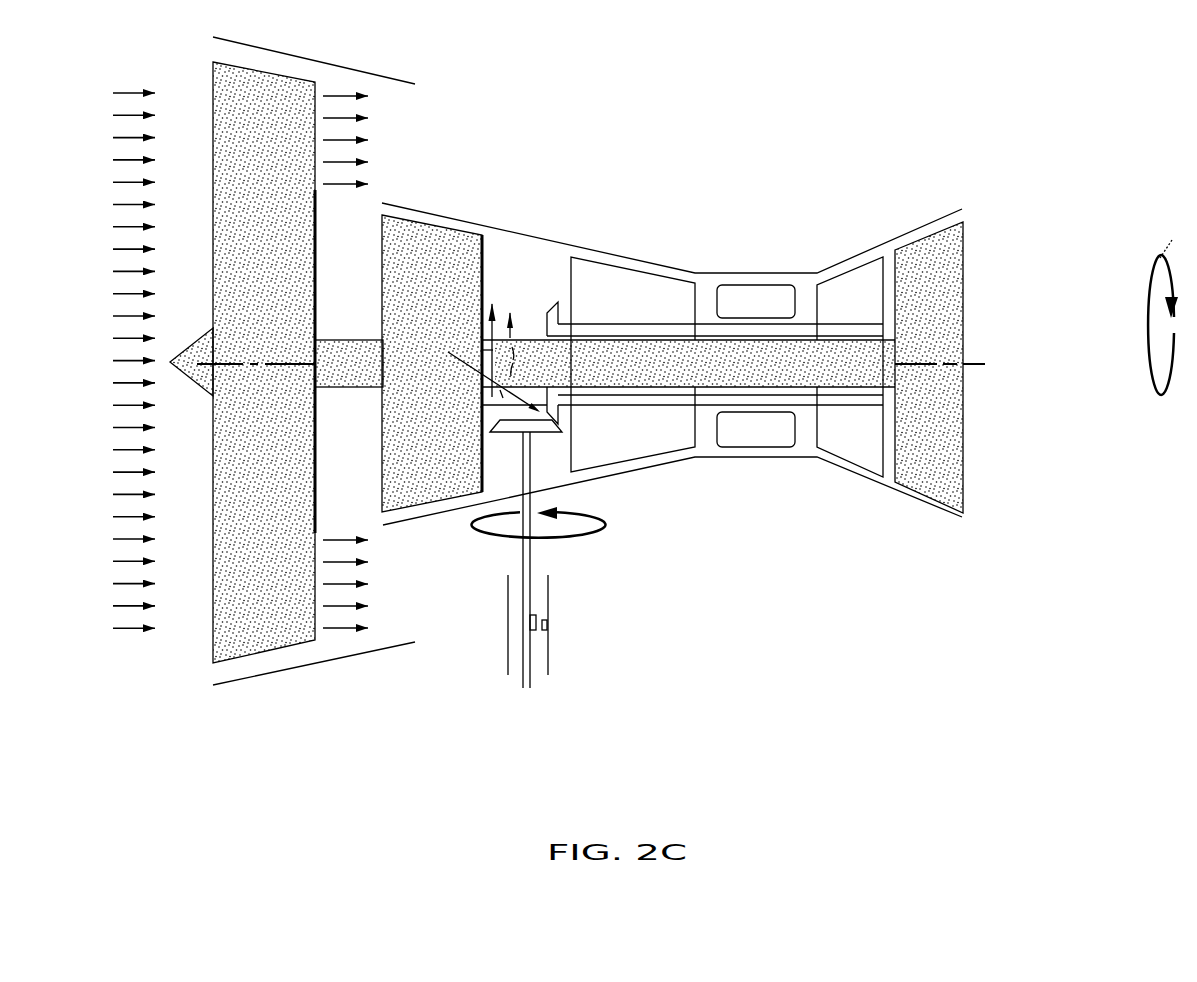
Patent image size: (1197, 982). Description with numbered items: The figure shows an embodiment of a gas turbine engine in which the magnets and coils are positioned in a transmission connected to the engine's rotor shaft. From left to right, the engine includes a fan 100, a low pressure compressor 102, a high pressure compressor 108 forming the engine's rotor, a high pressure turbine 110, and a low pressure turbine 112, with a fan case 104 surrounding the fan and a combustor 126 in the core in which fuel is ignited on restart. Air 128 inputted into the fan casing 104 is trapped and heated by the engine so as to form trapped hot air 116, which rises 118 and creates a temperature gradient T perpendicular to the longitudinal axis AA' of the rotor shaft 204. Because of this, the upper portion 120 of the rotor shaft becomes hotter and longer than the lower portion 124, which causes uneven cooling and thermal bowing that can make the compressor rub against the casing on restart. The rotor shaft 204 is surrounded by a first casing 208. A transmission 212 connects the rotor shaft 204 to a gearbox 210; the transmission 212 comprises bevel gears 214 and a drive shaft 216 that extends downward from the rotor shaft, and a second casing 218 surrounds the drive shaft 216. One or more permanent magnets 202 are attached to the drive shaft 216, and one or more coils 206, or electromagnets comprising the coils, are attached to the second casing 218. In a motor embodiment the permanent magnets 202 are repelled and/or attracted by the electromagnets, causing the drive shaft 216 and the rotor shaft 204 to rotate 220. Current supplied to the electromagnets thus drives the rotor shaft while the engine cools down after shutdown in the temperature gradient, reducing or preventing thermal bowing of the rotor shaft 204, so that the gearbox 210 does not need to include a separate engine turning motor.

The fan 100 is at (244, 231).
The low pressure compressor 102 is at (430, 224).
The fan case 104 is at (313, 61).
The high pressure compressor 108 is at (633, 268).
The high pressure turbine 110 is at (852, 268).
The low pressure turbine 112 is at (928, 236).
The trapped hot air 116 is at (522, 240).
The rising of hot air 118 is at (508, 336).
The upper portion of rotor shaft 120 is at (703, 323).
The lower portion of rotor shaft 124 is at (703, 407).
The combustor 126 is at (755, 283).
The air 128 is at (115, 82).
The permanent magnets 202 is at (537, 618).
The rotor shaft 204 is at (873, 333).
The coils 206 is at (548, 625).
The first casing 208 is at (413, 517).
The gearbox 210 is at (596, 767).
The transmission 212 is at (641, 633).
The bevel gears 214 is at (476, 368).
The drive shaft 216 is at (532, 547).
The second casing 218 is at (548, 658).
The rotation 220 is at (597, 522).